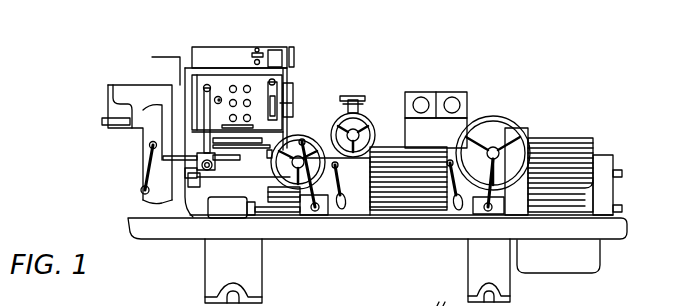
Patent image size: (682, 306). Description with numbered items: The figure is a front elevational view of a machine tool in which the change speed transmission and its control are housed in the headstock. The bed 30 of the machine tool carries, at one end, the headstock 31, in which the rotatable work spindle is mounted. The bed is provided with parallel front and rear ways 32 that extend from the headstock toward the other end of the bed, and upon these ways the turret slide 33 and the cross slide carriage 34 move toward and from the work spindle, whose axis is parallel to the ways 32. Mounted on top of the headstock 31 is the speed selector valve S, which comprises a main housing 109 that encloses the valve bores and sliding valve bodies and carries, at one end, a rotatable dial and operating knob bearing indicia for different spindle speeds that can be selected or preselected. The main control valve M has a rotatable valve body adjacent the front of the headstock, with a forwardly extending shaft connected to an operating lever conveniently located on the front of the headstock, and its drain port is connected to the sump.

The speed selector valve S is at (243, 40).
The main housing 109 is at (239, 57).
The main control valve M is at (301, 96).
The headstock 31 is at (300, 134).
The cross slide carriage 34 is at (370, 143).
The ways 32 is at (382, 152).
The turret slide 33 is at (435, 135).
The bed 30 is at (379, 213).